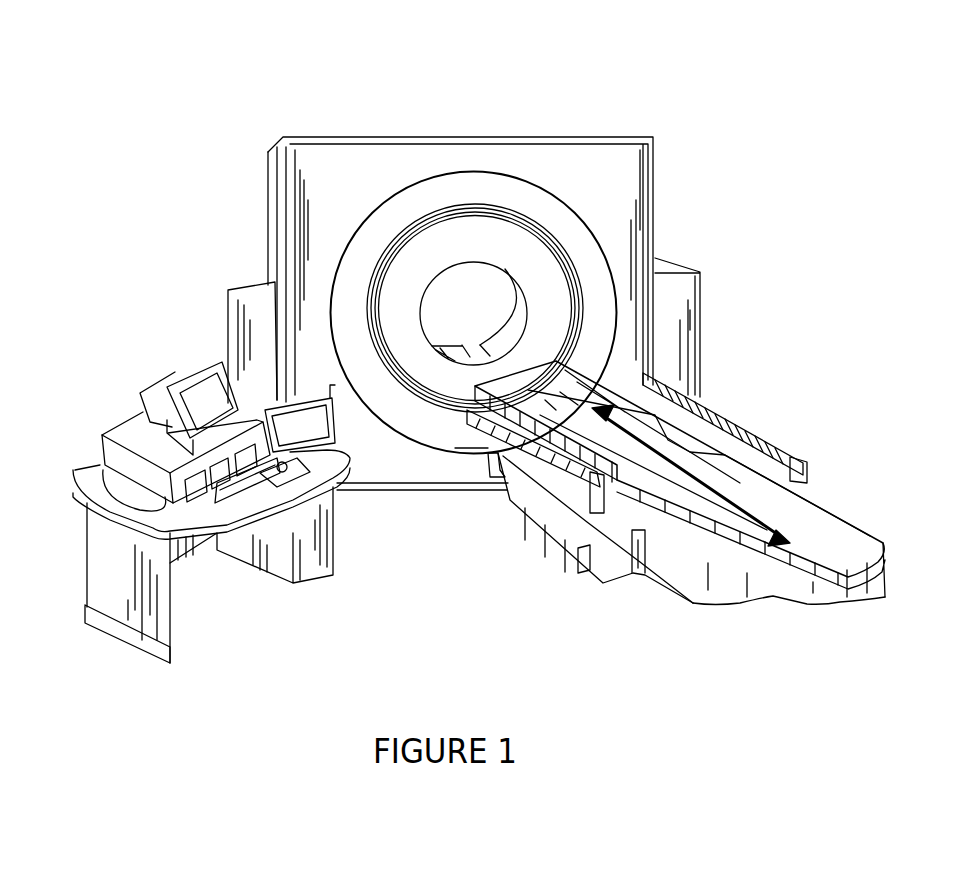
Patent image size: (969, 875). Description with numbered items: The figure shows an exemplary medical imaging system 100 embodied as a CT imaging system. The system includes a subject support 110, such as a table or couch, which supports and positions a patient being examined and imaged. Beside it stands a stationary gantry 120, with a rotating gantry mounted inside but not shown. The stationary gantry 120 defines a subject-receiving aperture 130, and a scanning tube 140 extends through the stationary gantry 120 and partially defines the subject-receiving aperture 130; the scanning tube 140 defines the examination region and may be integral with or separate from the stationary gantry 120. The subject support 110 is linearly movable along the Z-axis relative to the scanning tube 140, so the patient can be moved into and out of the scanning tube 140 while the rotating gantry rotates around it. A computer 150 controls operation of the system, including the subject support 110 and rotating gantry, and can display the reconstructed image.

The medical imaging system 100 is at (228, 156).
The subject support 110 is at (697, 473).
The stationary gantry 120 is at (320, 152).
The subject-receiving aperture 130 is at (473, 288).
The scanning tube 140 is at (507, 322).
The computer 150 is at (163, 393).